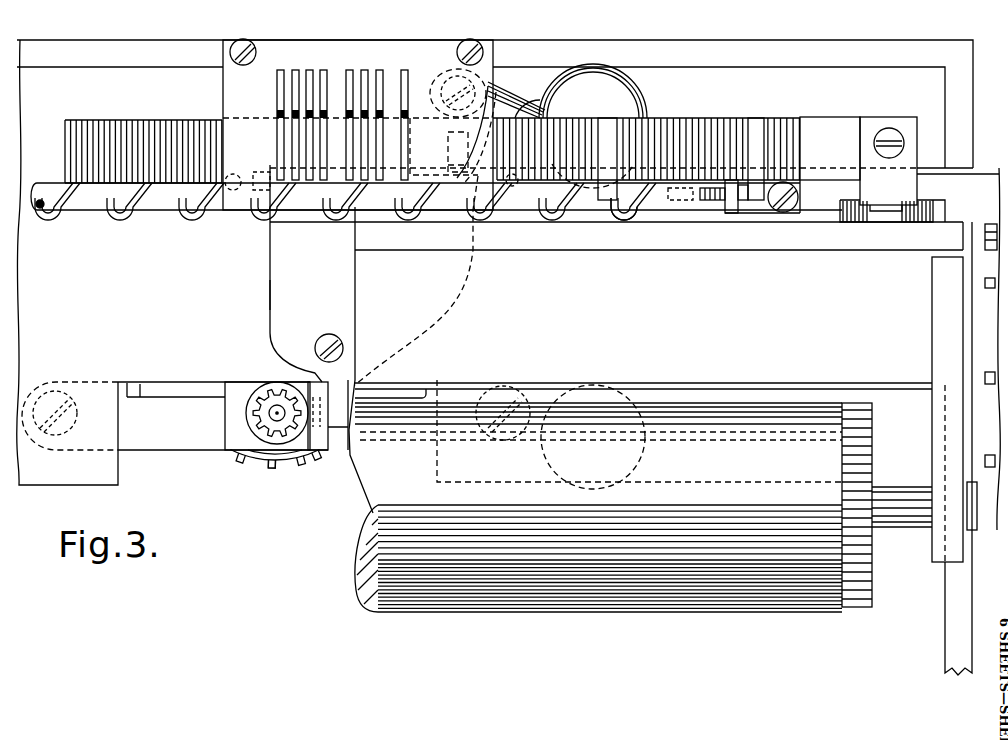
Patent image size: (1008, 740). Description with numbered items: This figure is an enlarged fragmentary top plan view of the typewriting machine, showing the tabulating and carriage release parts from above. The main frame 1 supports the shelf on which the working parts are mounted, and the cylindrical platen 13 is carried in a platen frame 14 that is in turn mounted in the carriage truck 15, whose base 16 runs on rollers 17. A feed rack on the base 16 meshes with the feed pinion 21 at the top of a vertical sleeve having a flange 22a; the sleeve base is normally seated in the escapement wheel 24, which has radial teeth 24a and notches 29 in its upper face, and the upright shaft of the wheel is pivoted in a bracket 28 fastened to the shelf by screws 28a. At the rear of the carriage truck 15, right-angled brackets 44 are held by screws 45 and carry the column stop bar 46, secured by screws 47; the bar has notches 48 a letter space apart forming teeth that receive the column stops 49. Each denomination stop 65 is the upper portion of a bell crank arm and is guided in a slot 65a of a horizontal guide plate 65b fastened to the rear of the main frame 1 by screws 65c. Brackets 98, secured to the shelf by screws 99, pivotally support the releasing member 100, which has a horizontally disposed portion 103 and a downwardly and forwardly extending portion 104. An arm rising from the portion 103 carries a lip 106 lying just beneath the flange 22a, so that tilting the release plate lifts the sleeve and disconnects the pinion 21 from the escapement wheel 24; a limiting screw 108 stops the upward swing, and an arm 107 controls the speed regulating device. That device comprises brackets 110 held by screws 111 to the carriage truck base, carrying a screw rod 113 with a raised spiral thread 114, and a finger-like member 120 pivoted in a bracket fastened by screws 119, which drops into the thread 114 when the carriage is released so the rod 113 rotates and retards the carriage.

The main frame 1 is at (748, 40).
The cylindrical platen 13 is at (767, 613).
The platen frame 14 is at (932, 438).
The carriage truck 15 is at (616, 360).
The base 16 is at (643, 393).
The rollers 17 is at (645, 118).
The feed pinion 21 is at (266, 395).
The flange 22a is at (246, 411).
The escapement wheel 24 is at (313, 462).
The radial teeth 24a is at (280, 470).
The bracket 28 is at (147, 450).
The screws 28a is at (78, 427).
The notches 29 is at (252, 468).
The right-angled brackets 44 is at (936, 215).
The screws 45 is at (900, 206).
The column stop bar 46 is at (822, 117).
The screws 47 is at (889, 128).
The notches 48 is at (722, 118).
The column stops 49 is at (607, 118).
The denomination stop 65 is at (311, 84).
The slots 65a is at (382, 142).
The guide plate 65b is at (403, 38).
The screws 65c is at (500, 52).
The brackets 98 is at (258, 196).
The screws 99 is at (230, 192).
The releasing member 100 is at (280, 273).
The horizontally disposed portion 103 is at (270, 294).
The downwardly and forwardly extending portion 104 is at (278, 163).
The lip 106 is at (315, 390).
The arm 107 is at (448, 143).
The limiting screw 108 is at (329, 334).
The brackets 110 is at (732, 215).
The screws 111 is at (798, 196).
The screw rod 113 is at (675, 203).
The raised spiral thread 114 is at (620, 221).
The screws 119 is at (523, 103).
The finger-like member 120 is at (448, 165).